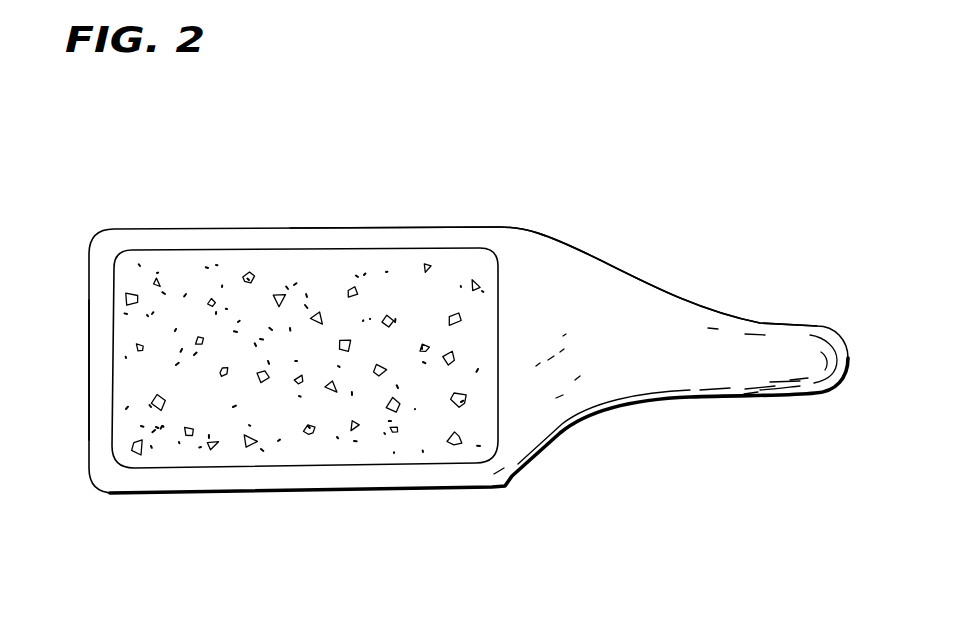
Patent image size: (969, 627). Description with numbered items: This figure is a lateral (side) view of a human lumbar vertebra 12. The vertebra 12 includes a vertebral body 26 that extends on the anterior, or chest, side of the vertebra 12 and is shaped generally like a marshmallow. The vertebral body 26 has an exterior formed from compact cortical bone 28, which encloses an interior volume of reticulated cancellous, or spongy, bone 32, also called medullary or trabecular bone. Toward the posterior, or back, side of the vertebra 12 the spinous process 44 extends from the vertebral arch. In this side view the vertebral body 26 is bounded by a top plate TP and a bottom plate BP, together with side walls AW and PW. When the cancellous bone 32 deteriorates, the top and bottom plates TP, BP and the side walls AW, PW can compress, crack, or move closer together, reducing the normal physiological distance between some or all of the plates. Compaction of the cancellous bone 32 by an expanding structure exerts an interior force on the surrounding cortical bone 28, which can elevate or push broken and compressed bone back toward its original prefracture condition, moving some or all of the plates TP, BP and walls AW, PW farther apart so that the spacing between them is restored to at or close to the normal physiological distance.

The vertebra 12 is at (306, 200).
The vertebral body 26 is at (338, 208).
The cortical bone 28 is at (208, 240).
The cancellous bone 32 is at (150, 288).
The spinous process 44 is at (768, 368).
The top plate TP is at (415, 226).
The posterior side wall PW is at (667, 330).
The anterior side wall AW is at (100, 374).
The bottom plate BP is at (403, 487).